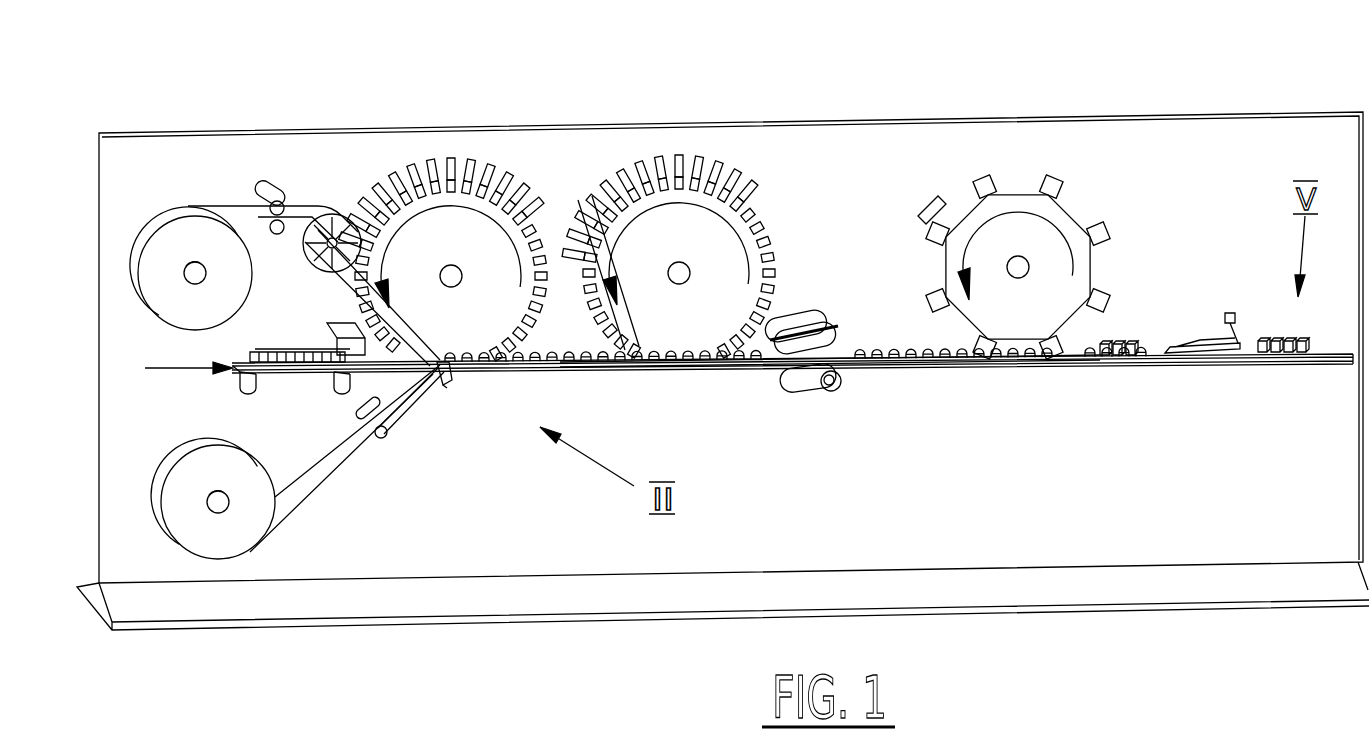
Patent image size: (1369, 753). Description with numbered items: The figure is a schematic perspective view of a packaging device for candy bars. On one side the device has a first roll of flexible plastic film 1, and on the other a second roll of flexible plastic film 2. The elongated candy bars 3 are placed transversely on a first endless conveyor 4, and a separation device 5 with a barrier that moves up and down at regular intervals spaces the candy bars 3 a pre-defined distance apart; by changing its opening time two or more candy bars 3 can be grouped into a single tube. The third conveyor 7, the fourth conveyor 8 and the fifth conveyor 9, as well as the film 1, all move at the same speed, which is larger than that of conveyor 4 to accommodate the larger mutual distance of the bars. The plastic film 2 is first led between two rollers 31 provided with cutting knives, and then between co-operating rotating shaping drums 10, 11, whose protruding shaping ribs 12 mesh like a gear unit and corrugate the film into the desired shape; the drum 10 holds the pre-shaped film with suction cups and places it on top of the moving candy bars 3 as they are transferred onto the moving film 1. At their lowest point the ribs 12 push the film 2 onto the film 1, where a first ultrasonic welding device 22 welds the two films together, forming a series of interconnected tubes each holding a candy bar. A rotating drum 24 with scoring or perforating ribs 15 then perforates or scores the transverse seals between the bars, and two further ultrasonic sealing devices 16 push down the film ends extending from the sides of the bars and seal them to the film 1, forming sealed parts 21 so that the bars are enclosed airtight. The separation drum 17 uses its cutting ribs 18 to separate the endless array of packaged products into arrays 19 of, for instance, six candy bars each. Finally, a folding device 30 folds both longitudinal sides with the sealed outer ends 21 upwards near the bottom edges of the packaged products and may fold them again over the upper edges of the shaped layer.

The first roll of flexible plastic film 1 is at (190, 533).
The second roll of flexible plastic film 2 is at (186, 210).
The candy bars 3 is at (328, 348).
The first endless conveyor 4 is at (310, 380).
The separation device 5 is at (345, 325).
The third conveyor 7 is at (524, 385).
The fourth conveyor 8 is at (410, 418).
The fifth conveyor 9 is at (688, 366).
The shaping drum 10 is at (474, 332).
The shaping drum 11 is at (320, 202).
The shaping ribs 12 is at (438, 172).
The scoring or perforating ribs 15 is at (665, 170).
The further ultrasonic sealing devices 16 is at (795, 328).
The separation drum 17 is at (1010, 180).
The cutting ribs 18 is at (918, 216).
The arrays 19 is at (1120, 348).
The sealed parts 21 is at (1116, 360).
The first ultrasonic welding device 22 is at (448, 378).
The rotating drum 24 is at (710, 326).
The folding device 30 is at (1225, 350).
The rollers 31 is at (240, 172).